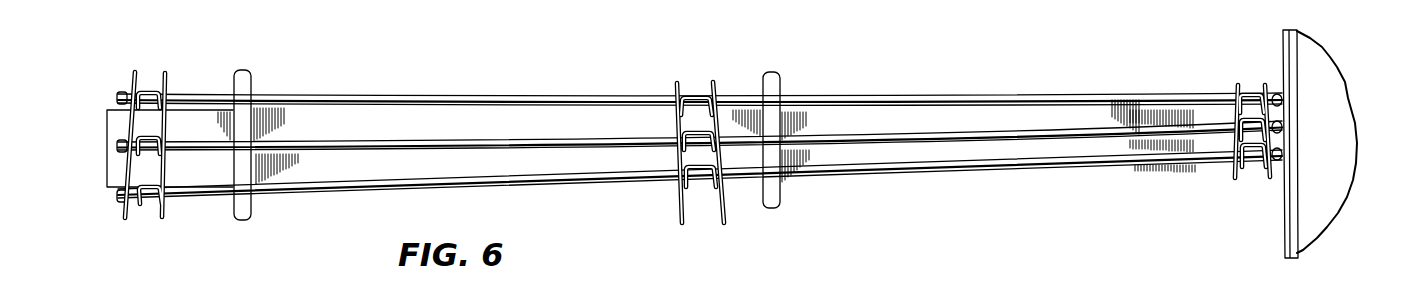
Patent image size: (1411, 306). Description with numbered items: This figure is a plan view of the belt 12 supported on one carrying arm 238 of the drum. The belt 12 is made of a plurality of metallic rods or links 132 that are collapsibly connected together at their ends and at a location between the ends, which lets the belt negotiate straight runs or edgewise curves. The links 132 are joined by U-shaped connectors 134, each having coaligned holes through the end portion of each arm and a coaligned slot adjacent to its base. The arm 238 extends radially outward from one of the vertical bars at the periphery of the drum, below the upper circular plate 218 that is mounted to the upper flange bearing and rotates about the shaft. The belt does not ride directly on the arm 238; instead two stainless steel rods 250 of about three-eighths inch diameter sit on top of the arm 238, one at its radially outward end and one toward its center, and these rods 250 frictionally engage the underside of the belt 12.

The belt 12 is at (749, 146).
The rods or links 132 is at (700, 143).
The U-shaped connectors 134 is at (680, 167).
The upper circular plate 218 is at (1340, 144).
The arms 238 is at (706, 173).
The stainless steel rods 250 is at (555, 137).